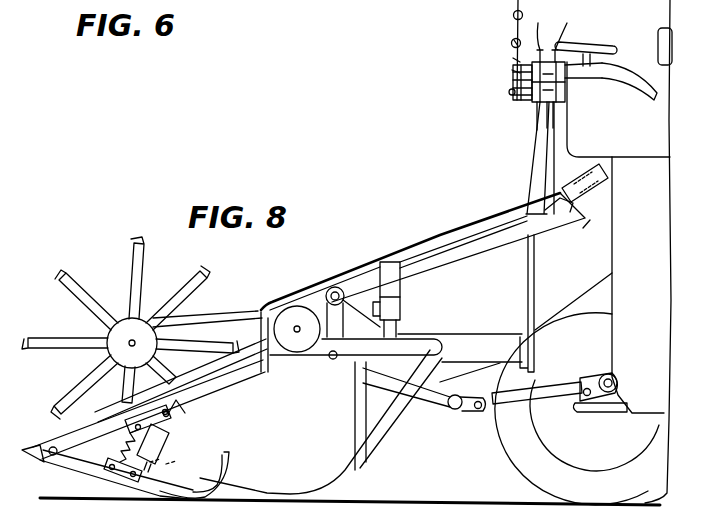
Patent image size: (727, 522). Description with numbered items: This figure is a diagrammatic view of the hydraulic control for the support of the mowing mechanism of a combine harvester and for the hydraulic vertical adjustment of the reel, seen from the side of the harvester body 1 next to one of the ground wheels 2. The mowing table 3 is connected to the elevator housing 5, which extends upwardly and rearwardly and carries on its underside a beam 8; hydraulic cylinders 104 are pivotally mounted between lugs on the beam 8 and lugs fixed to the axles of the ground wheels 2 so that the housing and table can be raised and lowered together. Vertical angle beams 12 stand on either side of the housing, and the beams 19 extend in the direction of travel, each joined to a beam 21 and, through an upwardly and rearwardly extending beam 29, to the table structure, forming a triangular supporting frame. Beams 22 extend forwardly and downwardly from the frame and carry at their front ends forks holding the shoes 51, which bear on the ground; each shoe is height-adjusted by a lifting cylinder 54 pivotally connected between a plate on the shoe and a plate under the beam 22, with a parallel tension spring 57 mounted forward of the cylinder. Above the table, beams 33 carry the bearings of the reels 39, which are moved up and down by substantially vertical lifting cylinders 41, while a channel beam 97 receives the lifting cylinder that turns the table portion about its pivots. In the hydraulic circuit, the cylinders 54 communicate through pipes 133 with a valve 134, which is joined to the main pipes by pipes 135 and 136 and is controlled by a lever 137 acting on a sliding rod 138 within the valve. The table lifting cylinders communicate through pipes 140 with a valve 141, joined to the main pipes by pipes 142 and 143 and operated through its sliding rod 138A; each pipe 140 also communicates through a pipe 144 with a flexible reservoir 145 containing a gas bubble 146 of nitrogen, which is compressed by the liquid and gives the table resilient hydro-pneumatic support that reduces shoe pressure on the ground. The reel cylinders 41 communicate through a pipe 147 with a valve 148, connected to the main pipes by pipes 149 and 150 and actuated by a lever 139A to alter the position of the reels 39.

The vehicle body 1 is at (610, 330).
The ground wheels 2 is at (530, 478).
The mowing table 3 is at (330, 487).
The elevator housing 5 is at (405, 418).
The beam 8 is at (455, 410).
The angle beams 12 is at (535, 295).
The beam 19 is at (466, 343).
The beam 21 is at (417, 345).
The beams 22 is at (103, 423).
The beam 29 is at (380, 427).
The beams 33 is at (234, 313).
The reels 39 is at (87, 283).
The lifting cylinder 41 is at (327, 306).
The shoes 51 is at (198, 498).
The lifting cylinder 54 is at (156, 449).
The tension springs 57 is at (122, 441).
The channel beam 97 is at (400, 288).
The hydraulic cylinders 104 is at (503, 408).
The pipes 133 is at (217, 383).
The valve 134 is at (538, 108).
The pipe 135 is at (512, 81).
The pipe 136 is at (565, 88).
The lever 137 is at (514, 43).
The sliding rod 138 is at (565, 98).
The sliding rod 138A is at (612, 79).
The lever 139A is at (513, 16).
The pipes 140 is at (440, 267).
The valve 141 is at (541, 38).
The pipe 142 is at (574, 37).
The pipe 143 is at (587, 35).
The pipe 144 is at (583, 228).
The reservoir 145 is at (563, 212).
The gas bubble 146 is at (608, 178).
The pipe 147 is at (428, 252).
The valve 148 is at (513, 72).
The pipe 149 is at (515, 61).
The pipe 150 is at (600, 67).